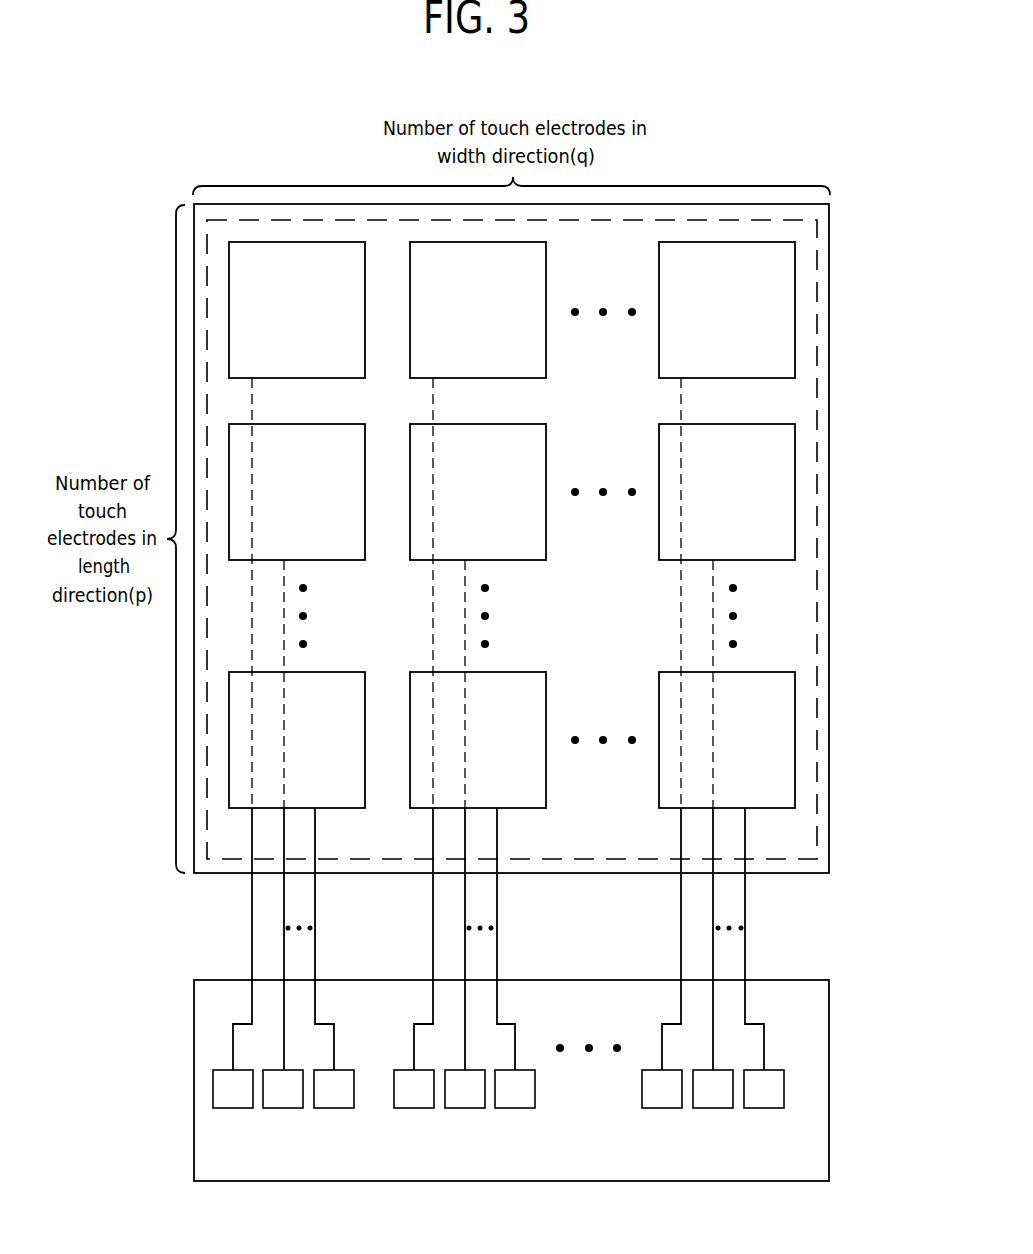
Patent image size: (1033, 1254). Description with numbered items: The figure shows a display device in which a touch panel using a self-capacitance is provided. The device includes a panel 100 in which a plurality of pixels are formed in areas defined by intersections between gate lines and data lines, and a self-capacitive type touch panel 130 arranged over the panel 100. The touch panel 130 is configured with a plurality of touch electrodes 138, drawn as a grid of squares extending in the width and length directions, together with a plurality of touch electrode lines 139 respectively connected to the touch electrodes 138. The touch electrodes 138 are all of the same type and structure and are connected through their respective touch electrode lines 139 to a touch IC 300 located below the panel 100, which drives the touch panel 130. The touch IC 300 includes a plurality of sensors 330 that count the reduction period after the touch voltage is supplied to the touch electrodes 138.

The panel 100 is at (829, 206).
The touch panel 130 is at (817, 306).
The touch electrode 138 is at (795, 494).
The touch electrode line 139 is at (713, 605).
The touch IC 300 is at (829, 1083).
The sensor 330 is at (498, 1089).